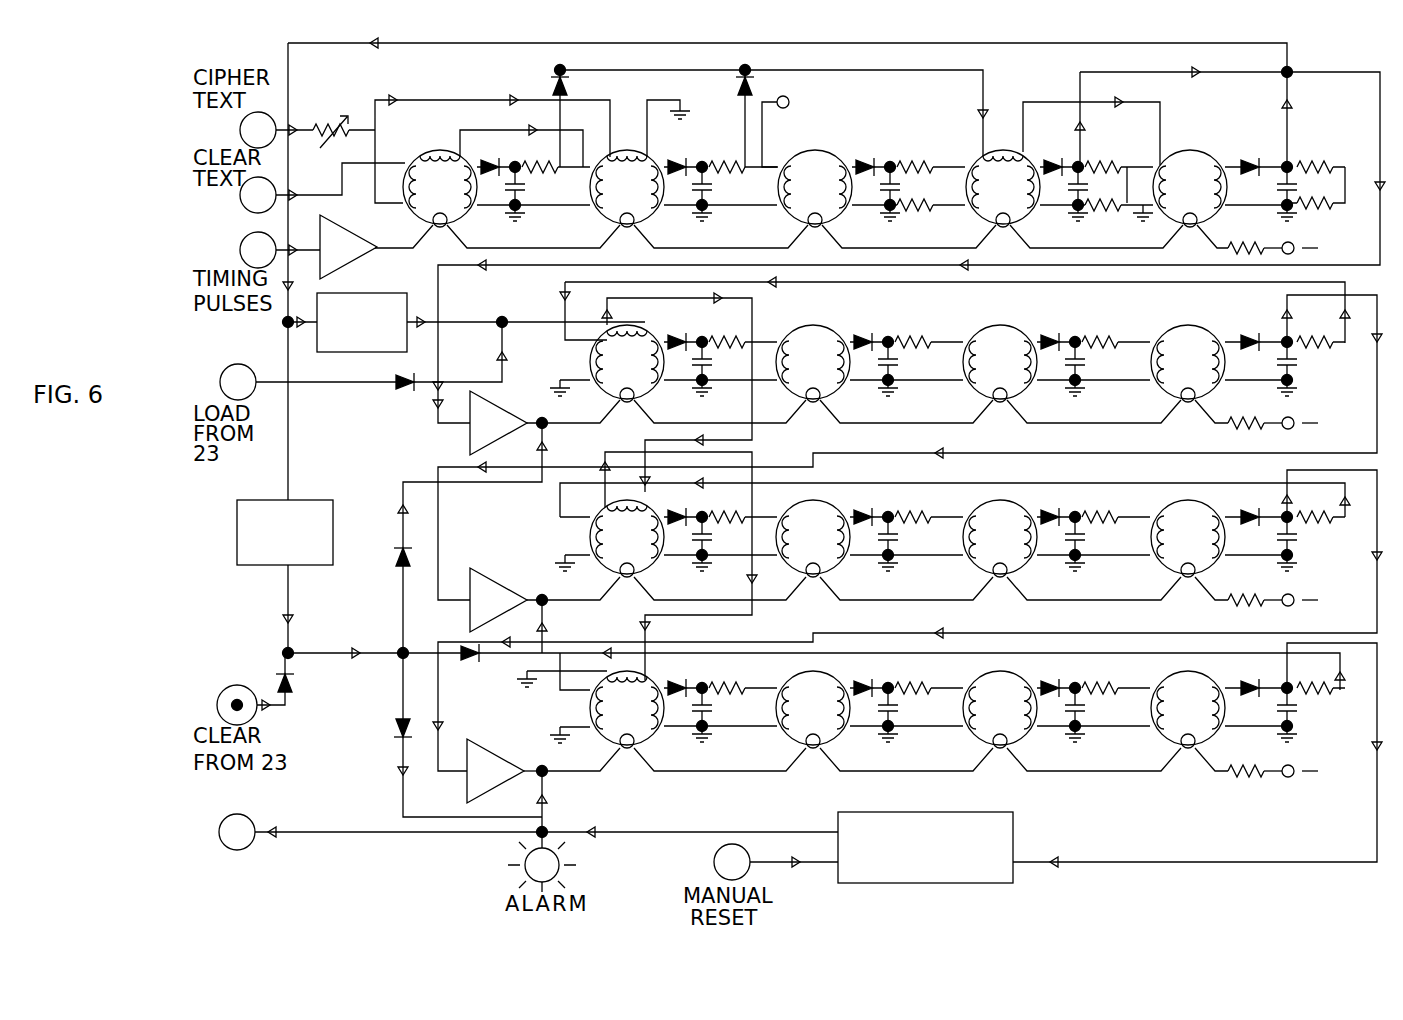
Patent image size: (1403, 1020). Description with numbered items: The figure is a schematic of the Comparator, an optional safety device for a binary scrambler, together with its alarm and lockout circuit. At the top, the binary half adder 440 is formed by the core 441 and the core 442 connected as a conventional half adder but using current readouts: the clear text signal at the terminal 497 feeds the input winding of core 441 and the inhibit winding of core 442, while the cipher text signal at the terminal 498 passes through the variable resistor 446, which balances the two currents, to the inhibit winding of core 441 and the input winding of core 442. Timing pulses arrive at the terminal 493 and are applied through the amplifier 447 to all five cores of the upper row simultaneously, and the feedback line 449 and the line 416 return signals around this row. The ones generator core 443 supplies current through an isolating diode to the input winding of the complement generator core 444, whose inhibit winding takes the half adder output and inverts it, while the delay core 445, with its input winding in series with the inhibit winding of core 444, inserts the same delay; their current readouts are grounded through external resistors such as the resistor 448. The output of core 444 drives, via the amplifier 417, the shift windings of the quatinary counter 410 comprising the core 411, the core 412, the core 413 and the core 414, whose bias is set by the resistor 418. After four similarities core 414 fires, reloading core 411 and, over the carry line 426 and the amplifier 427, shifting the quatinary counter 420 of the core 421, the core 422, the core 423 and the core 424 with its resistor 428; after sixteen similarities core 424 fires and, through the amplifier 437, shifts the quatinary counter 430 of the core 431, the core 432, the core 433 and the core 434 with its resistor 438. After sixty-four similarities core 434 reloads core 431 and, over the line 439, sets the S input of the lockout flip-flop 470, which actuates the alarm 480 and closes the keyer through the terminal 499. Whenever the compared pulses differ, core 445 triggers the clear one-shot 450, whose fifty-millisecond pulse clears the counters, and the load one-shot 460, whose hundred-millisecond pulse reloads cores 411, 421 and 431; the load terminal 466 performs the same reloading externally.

The output line 449 is at (790, 94).
The carry output line 416 is at (909, 238).
The cipher text terminal 498 is at (253, 130).
The variable resistor 446 is at (459, 149).
The clear text terminal 497 is at (299, 188).
The timing pulse terminal 493 is at (256, 250).
The amplifier 447 is at (348, 247).
The binary half adder 440 is at (801, 237).
The core 441 is at (695, 146).
The core 442 is at (699, 146).
The ones generator core 443 is at (871, 188).
The complement generator core 444 is at (1063, 149).
The delay core 445 is at (1249, 188).
The external resistor 448 is at (1273, 238).
The load one-shot 460 is at (466, 334).
The clear one-shot 450 is at (285, 545).
The load terminal 466 is at (350, 361).
The amplifier 417 is at (471, 611).
The quatinary counter 410 is at (946, 384).
The core 411 is at (683, 363).
The core 412 is at (869, 363).
The core 413 is at (1056, 363).
The core 414 is at (1248, 363).
The external resistor 418 is at (1273, 411).
The carry line 426 is at (910, 447).
The amplifier 427 is at (509, 610).
The quatinary counter 420 is at (946, 566).
The core 421 is at (683, 538).
The core 422 is at (869, 538).
The core 423 is at (1056, 538).
The core 424 is at (1248, 538).
The external resistor 428 is at (907, 620).
The amplifier 437 is at (507, 771).
The quatinary counter 430 is at (816, 707).
The core 431 is at (683, 709).
The core 432 is at (869, 709).
The core 433 is at (1056, 709).
The core 434 is at (1248, 709).
The external resistor 438 is at (1273, 759).
The overflow line 439 is at (1197, 755).
The terminal 499 is at (528, 827).
The alarm 480 is at (562, 862).
The flip-flop 470 is at (863, 861).